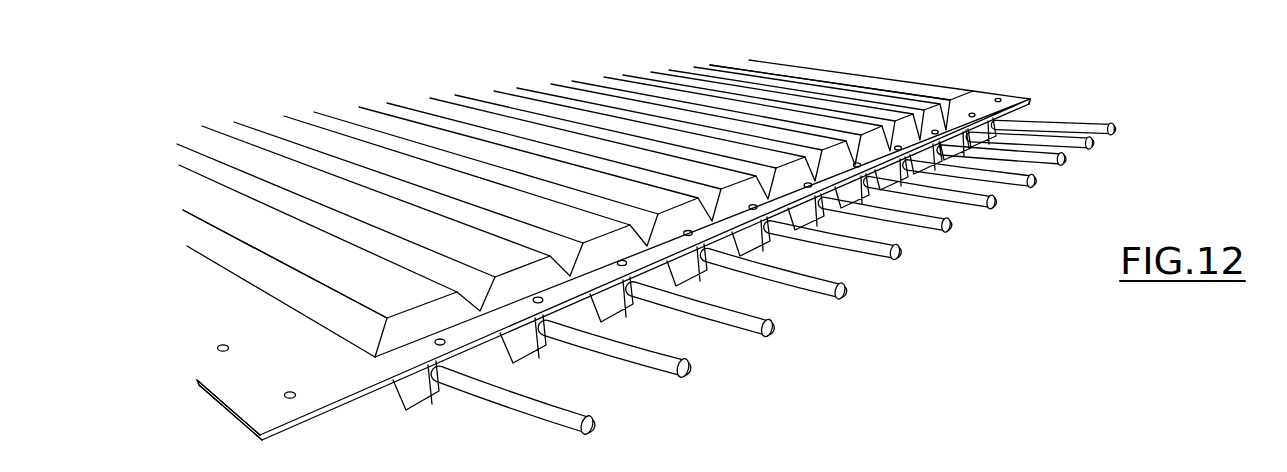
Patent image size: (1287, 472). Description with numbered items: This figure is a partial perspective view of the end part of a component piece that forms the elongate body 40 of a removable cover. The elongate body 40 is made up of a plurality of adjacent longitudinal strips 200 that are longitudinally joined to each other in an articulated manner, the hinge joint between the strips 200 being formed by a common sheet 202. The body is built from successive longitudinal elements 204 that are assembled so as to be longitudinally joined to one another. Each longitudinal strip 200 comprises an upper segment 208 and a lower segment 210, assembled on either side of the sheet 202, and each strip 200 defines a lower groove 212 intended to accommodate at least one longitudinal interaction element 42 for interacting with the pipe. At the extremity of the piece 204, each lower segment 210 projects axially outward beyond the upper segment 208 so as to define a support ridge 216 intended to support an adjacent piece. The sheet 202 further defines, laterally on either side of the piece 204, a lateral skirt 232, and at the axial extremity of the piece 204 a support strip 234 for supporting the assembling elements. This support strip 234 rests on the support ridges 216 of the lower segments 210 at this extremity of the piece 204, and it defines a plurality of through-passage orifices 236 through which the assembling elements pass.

The elongate body 40 is at (150, 180).
The longitudinal strip 200 is at (662, 83).
The sheet 202 is at (1013, 83).
The longitudinal element 204 is at (943, 53).
The upper segment 208 is at (905, 88).
The lower segment 210 is at (1000, 117).
The lower groove 212 is at (977, 127).
The support ridge 216 is at (760, 228).
The lateral skirt 232 is at (242, 385).
The support strip 234 is at (478, 328).
The through-passage orifice 236 is at (438, 335).
The longitudinal interaction element 42 is at (1052, 160).